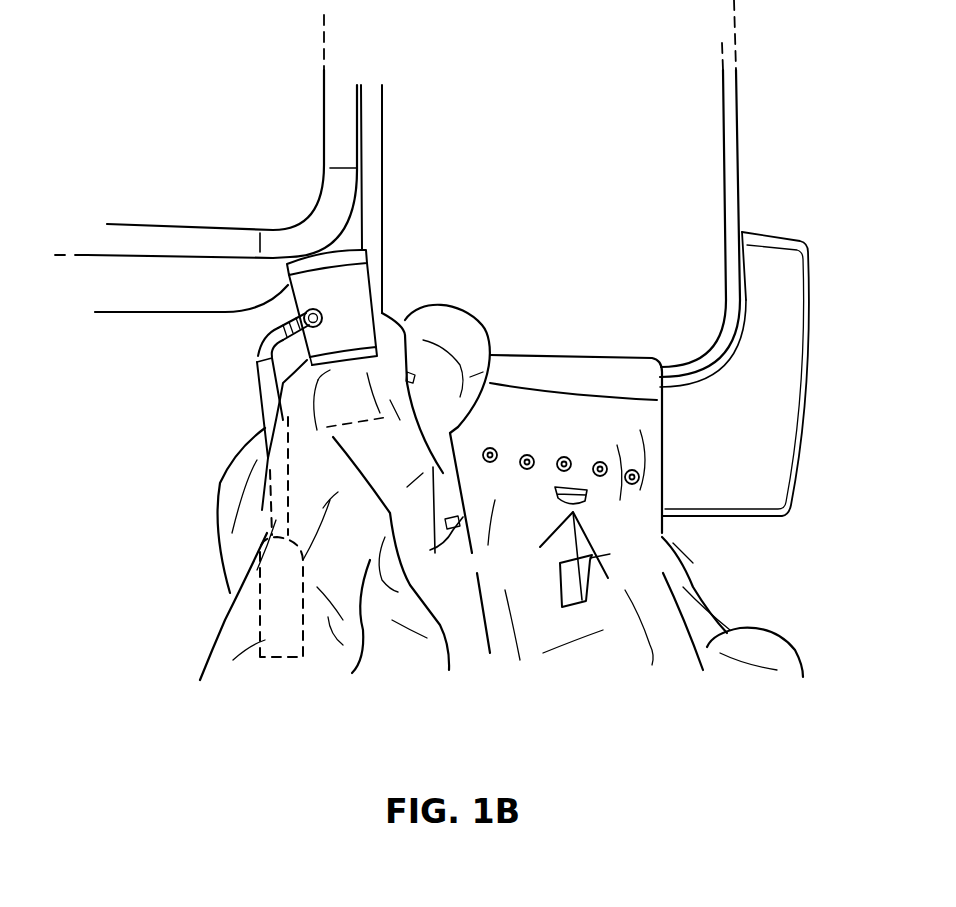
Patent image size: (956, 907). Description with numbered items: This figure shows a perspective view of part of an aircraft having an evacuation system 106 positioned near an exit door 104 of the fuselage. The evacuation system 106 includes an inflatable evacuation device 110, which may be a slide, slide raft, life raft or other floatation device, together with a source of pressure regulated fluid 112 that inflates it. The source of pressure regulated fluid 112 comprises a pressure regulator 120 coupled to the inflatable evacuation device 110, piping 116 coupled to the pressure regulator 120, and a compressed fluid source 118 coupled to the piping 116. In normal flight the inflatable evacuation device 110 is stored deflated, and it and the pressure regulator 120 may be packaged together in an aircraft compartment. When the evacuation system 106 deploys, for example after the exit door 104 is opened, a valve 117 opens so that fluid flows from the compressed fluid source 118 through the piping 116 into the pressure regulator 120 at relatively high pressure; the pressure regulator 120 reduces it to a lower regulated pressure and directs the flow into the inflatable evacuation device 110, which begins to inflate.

The exit door 104 is at (741, 103).
The evacuation system 106 is at (100, 452).
The inflatable evacuation device 110 is at (465, 648).
The source of pressure regulated fluid 112 is at (321, 244).
The piping 116 is at (260, 386).
The valve 117 is at (283, 513).
The compressed fluid source 118 is at (270, 660).
The pressure regulator 120 is at (362, 300).